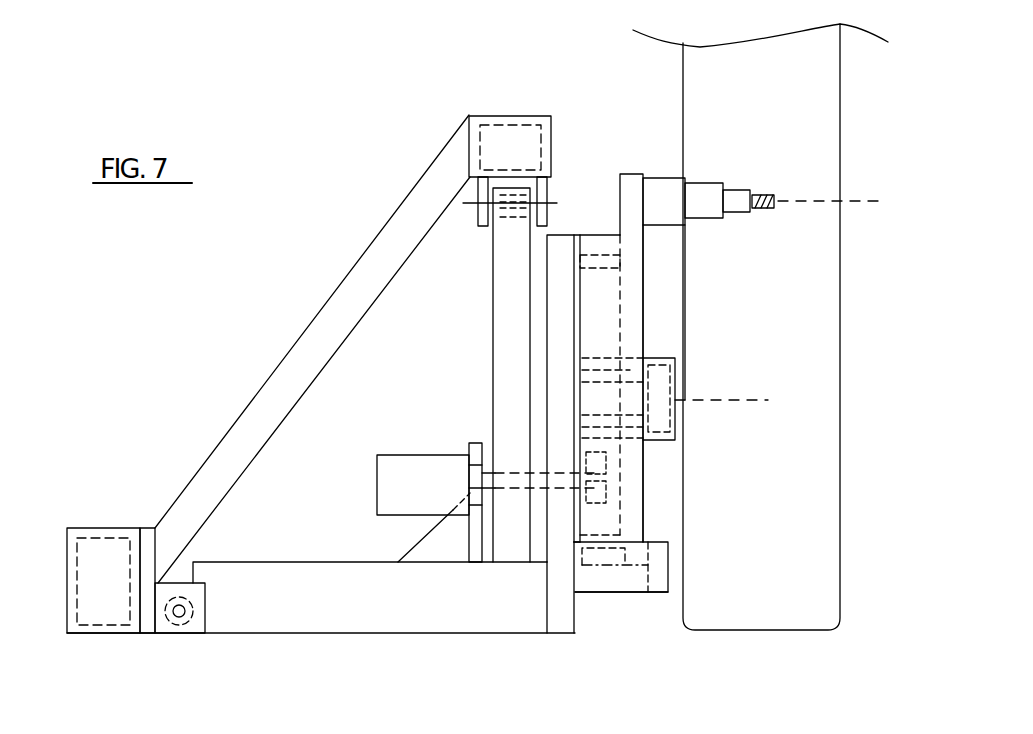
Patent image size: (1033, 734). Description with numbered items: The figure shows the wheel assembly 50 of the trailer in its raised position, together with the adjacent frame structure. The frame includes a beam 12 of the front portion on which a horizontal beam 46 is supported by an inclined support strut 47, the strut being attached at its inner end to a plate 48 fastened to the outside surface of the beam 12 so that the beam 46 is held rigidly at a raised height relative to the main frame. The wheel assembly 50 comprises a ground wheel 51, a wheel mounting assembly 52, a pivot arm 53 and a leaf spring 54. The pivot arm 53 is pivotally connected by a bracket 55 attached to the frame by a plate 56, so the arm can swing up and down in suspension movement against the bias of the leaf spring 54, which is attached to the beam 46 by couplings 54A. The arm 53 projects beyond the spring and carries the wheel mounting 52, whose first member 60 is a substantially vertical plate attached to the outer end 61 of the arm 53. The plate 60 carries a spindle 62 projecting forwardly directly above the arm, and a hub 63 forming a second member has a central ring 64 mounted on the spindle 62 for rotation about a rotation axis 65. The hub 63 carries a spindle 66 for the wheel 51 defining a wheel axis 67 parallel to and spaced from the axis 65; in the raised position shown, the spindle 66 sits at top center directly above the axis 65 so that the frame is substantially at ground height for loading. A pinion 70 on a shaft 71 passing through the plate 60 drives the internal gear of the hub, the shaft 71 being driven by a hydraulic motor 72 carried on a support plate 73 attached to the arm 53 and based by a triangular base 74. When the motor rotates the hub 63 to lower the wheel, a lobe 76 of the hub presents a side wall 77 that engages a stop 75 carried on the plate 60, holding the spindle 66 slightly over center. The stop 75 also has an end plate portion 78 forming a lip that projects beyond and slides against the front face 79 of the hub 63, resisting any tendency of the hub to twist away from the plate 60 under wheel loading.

The beam 12 is at (82, 545).
The horizontal beam 46 is at (510, 139).
The inclined support strut 47 is at (312, 349).
The plate 48 is at (126, 545).
The wheel assembly 50 is at (559, 674).
The ground wheel 51 is at (770, 327).
The wheel mounting assembly 52 is at (601, 208).
The pivot arm 53 is at (321, 633).
The leaf spring 54 is at (469, 375).
The couplings 54A is at (467, 254).
The bracket 55 is at (205, 653).
The plate 56 is at (167, 646).
The first member 60 is at (583, 367).
The outer end 61 is at (547, 615).
The spindle 62 is at (700, 312).
The hub 63 is at (685, 291).
The central ring 64 is at (689, 384).
The rotation axis 65 is at (743, 372).
The spindle 66 is at (696, 170).
The wheel axis 67 is at (826, 173).
The pinion 70 is at (661, 474).
The shaft 71 is at (519, 438).
The hydraulic motor 72 is at (378, 485).
The support plate 73 is at (482, 528).
The triangular base 74 is at (434, 553).
The stop 75 is at (625, 637).
The lobe 76 is at (640, 312).
The side wall 77 is at (654, 511).
The end plate portion 78 is at (656, 567).
The front face 79 is at (689, 493).